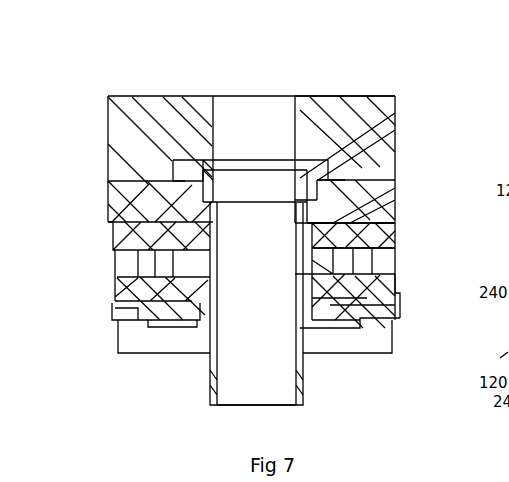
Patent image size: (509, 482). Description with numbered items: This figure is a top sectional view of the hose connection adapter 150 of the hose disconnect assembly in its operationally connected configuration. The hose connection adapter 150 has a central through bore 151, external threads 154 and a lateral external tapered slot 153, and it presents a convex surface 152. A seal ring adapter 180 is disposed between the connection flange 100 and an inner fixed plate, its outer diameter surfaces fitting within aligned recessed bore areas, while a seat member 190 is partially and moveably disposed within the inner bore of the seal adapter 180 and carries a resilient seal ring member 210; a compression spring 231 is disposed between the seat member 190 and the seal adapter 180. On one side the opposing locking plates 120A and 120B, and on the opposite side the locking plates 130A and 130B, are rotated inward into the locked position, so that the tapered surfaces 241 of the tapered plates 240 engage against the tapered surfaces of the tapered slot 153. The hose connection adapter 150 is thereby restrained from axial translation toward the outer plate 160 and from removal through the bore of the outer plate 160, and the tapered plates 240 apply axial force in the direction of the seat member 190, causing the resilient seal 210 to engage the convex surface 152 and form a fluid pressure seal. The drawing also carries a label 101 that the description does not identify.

The connection flange 100 is at (380, 93).
The body 101 is at (232, 108).
The seal ring adapter 180 is at (330, 158).
The seat member 190 is at (187, 114).
The resilient seal ring member 210 is at (397, 150).
The compression spring 231 is at (198, 198).
The convex surface 152 is at (397, 192).
The locking plate 130A is at (397, 243).
The locking plate 120A is at (397, 282).
The tapered plate 240 is at (402, 293).
The tapered surface 241 is at (390, 323).
The lateral external tapered slot 153 is at (345, 332).
The locking plate 130B is at (113, 243).
The locking plate 120B is at (113, 295).
The outer plate 160 is at (135, 310).
The hose connection adapter 150 is at (305, 325).
The external threads 154 is at (210, 387).
The central through bore 151 is at (238, 390).